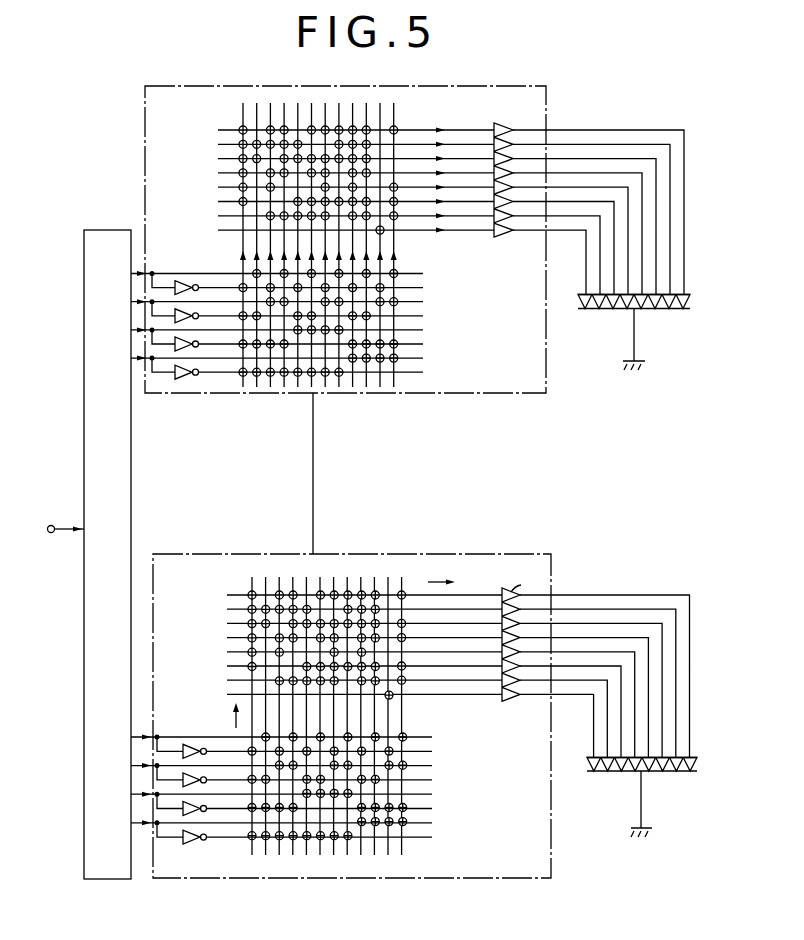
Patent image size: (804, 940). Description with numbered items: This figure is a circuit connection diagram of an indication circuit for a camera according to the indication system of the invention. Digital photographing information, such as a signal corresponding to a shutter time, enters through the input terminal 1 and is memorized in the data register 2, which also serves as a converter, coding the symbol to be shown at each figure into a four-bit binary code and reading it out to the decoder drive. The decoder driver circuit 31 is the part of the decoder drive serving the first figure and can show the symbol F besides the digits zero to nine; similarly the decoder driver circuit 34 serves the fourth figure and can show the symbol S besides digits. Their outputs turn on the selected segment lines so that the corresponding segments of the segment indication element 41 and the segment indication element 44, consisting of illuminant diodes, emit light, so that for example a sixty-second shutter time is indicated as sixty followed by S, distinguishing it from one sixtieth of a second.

The input terminal 1 is at (51, 525).
The data register 2 is at (120, 461).
The decoder driver circuit for the first figure 31 is at (470, 394).
The decoder driver circuit for the fourth figure 34 is at (470, 554).
The segment indication element 41 is at (690, 301).
The segment indication element 44 is at (697, 764).